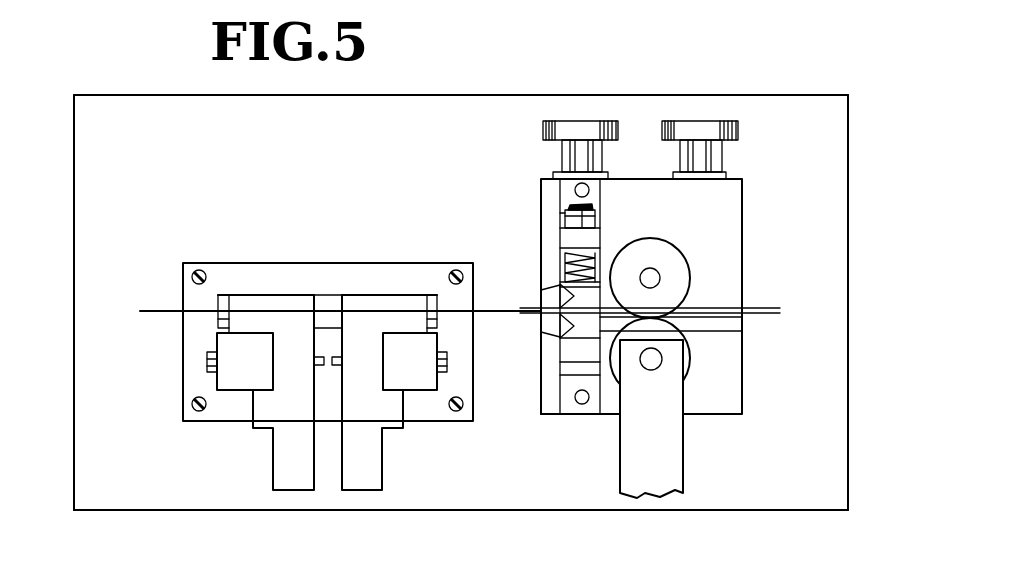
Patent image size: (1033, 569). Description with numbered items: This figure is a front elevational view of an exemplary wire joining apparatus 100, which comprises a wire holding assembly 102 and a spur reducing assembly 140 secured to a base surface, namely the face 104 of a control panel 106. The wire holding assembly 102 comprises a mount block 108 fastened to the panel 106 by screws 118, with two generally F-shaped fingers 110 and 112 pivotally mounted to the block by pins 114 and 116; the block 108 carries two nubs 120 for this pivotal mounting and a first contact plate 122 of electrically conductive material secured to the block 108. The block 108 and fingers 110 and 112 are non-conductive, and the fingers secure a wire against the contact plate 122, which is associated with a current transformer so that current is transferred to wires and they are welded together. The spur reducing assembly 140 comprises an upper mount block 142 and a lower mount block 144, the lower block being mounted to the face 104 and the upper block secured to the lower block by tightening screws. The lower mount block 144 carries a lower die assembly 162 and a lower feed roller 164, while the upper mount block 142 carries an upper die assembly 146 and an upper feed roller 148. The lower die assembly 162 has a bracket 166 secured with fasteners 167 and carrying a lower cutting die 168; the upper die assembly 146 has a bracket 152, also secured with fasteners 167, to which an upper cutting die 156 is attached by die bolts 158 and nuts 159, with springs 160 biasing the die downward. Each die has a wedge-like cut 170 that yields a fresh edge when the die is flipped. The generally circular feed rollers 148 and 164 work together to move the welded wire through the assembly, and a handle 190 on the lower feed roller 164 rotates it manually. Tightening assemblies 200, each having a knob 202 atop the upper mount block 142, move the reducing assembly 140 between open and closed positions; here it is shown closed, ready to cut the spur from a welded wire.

The wire joining apparatus 100 is at (107, 76).
The wire holding assembly 102 is at (153, 188).
The face 104 is at (320, 145).
The control panel 106 is at (150, 512).
The mount block 108 is at (425, 265).
The finger 110 is at (283, 460).
The finger 112 is at (365, 458).
The pin 114 is at (208, 353).
The pin 116 is at (448, 360).
The screws 118 is at (198, 275).
The nubs 120 is at (240, 372).
The first contact plate 122 is at (328, 295).
The spur reducing assembly 140 is at (652, 289).
The upper mount block 142 is at (742, 227).
The lower mount block 144 is at (742, 378).
The upper die assembly 146 is at (538, 205).
The upper feed roller 148 is at (690, 277).
The bracket 152 is at (560, 192).
The upper cutting die 156 is at (565, 262).
The die bolts 158 is at (590, 208).
The nuts 159 is at (560, 225).
The springs 160 is at (600, 220).
The lower die assembly 162 is at (547, 436).
The lower feed roller 164 is at (742, 331).
The bracket 166 is at (588, 414).
The fasteners 167 is at (592, 207).
The lower cutting die 168 is at (560, 332).
The wedge-like cut 170 is at (546, 294).
The handle 190 is at (683, 472).
The tightening assemblies 200 is at (635, 106).
The knob 202 is at (580, 120).